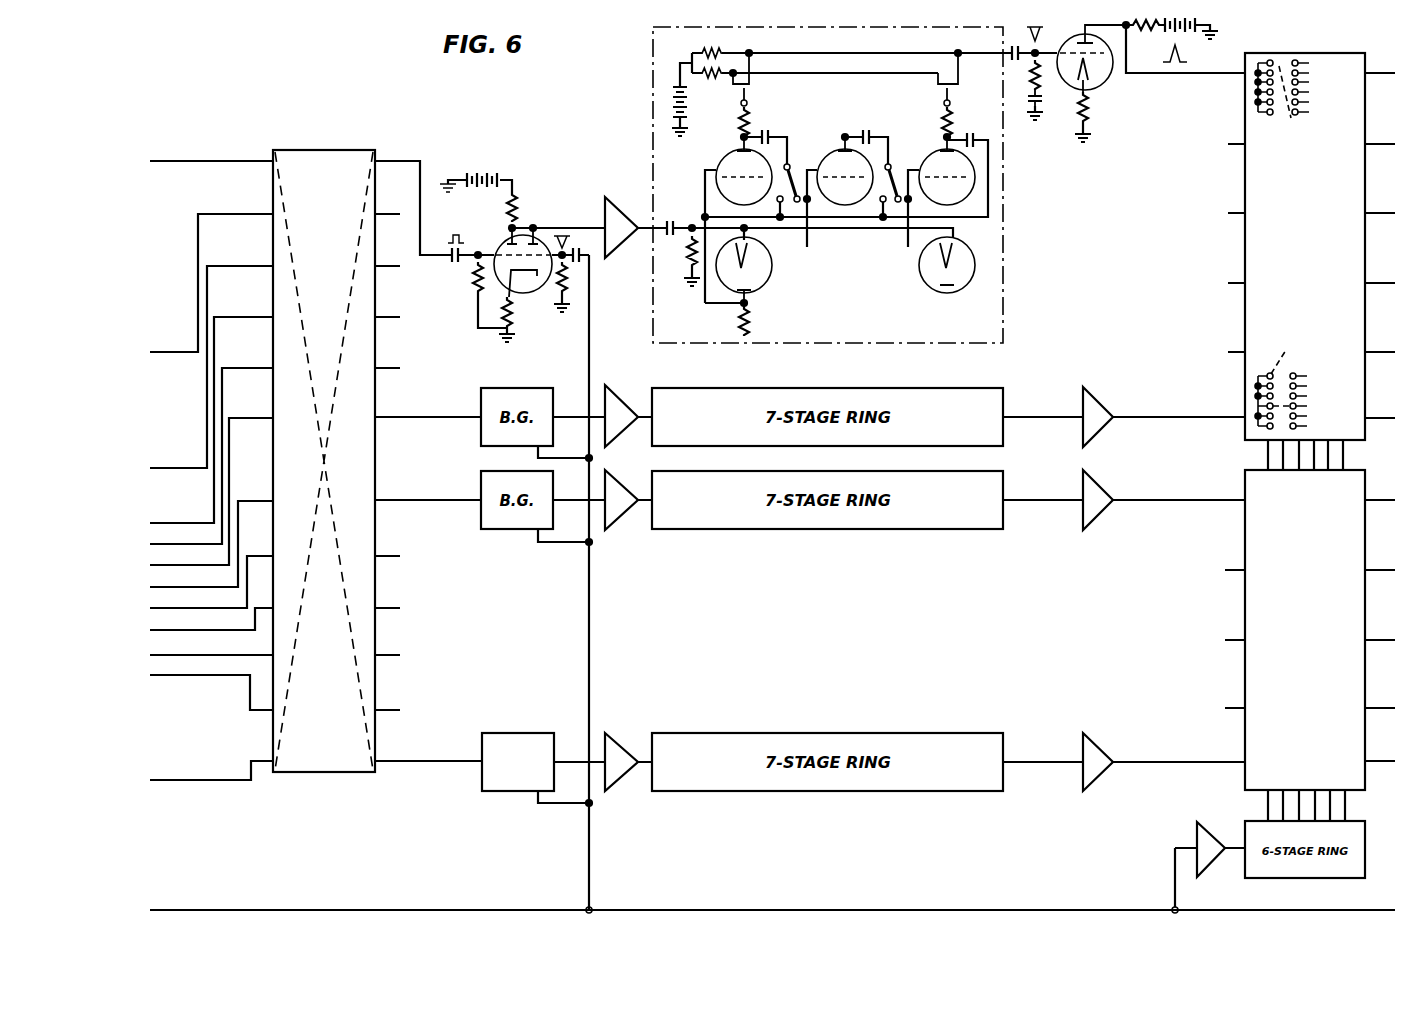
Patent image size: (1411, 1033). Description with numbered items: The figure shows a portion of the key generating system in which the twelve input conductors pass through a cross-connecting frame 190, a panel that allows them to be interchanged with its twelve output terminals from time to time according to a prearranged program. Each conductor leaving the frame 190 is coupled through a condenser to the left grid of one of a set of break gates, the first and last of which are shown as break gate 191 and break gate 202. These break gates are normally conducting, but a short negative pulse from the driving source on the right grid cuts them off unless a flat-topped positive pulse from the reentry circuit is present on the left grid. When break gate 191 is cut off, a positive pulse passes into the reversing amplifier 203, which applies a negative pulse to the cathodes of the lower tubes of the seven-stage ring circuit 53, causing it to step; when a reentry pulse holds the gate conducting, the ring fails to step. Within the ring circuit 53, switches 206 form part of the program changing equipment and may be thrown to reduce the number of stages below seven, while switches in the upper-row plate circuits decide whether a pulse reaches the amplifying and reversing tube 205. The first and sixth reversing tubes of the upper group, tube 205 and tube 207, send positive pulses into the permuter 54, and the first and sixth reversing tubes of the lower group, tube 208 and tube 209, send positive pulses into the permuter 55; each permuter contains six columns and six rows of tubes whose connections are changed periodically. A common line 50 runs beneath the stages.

The cross-connecting frame 190 is at (318, 150).
The break gate 191 is at (525, 292).
The break gate 202 is at (506, 792).
The reversing amplifier 203 is at (619, 203).
The amplifying and reversing tube 205 is at (1104, 80).
The switch 206 is at (899, 192).
The reversing tube 207 is at (1096, 404).
The reversing tube 208 is at (1098, 490).
The reversing tube 209 is at (1098, 752).
The common bus line 50 is at (705, 908).
The seven-stage ring circuit 53 is at (828, 198).
The permuter 54 is at (1320, 55).
The permuter 55 is at (1245, 777).